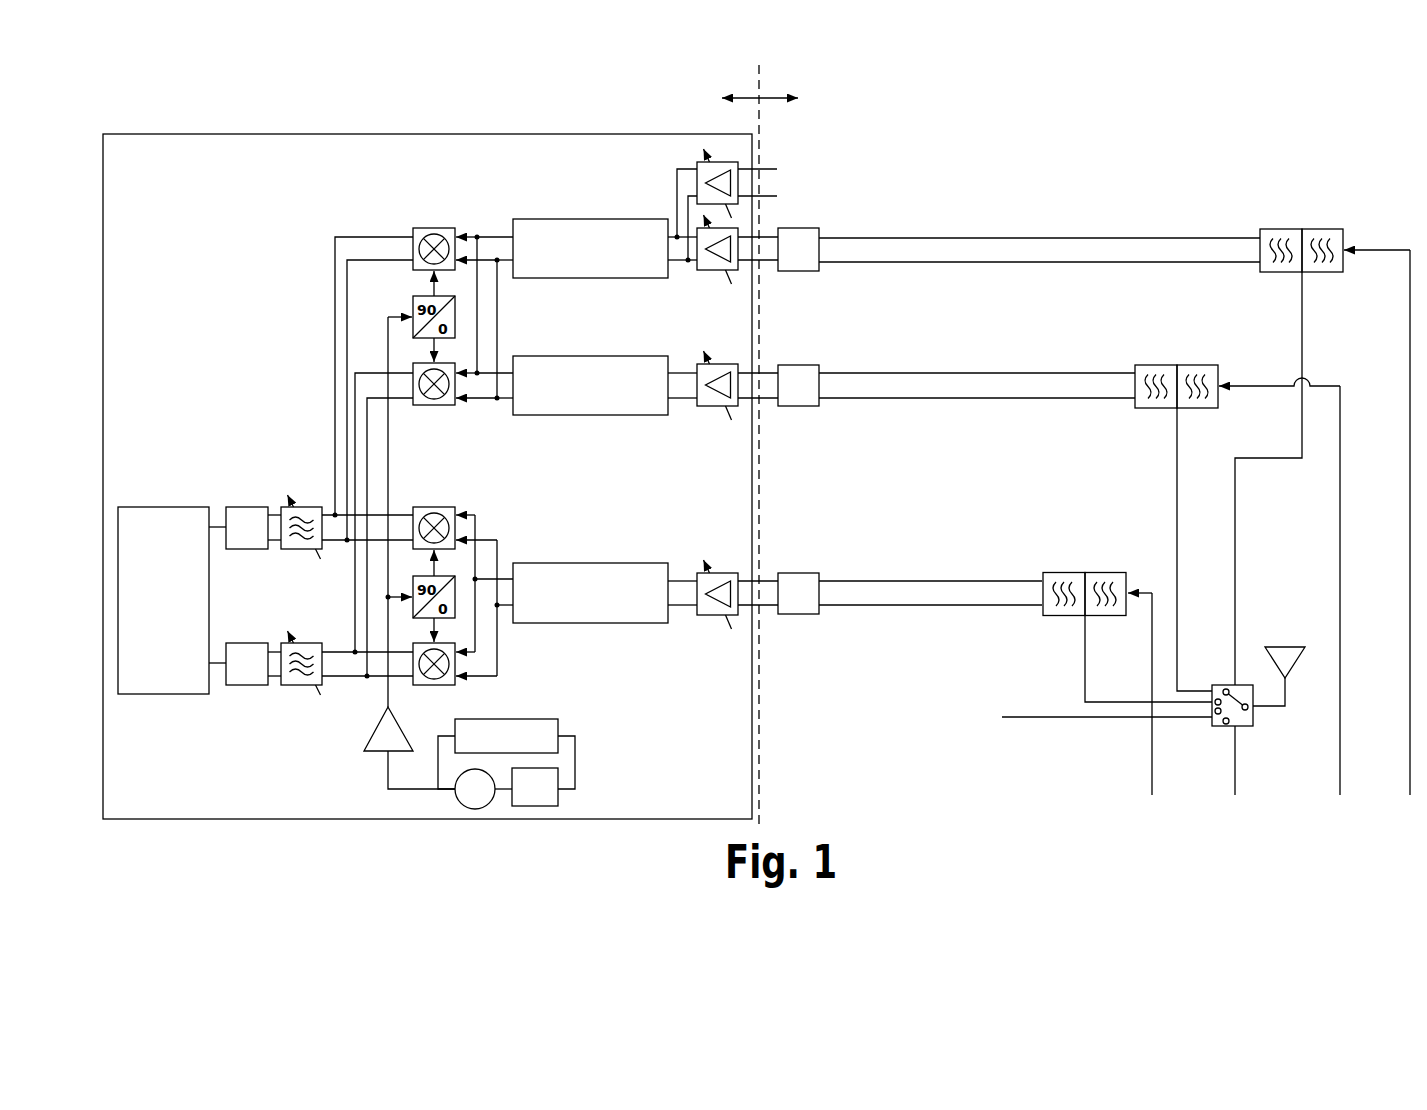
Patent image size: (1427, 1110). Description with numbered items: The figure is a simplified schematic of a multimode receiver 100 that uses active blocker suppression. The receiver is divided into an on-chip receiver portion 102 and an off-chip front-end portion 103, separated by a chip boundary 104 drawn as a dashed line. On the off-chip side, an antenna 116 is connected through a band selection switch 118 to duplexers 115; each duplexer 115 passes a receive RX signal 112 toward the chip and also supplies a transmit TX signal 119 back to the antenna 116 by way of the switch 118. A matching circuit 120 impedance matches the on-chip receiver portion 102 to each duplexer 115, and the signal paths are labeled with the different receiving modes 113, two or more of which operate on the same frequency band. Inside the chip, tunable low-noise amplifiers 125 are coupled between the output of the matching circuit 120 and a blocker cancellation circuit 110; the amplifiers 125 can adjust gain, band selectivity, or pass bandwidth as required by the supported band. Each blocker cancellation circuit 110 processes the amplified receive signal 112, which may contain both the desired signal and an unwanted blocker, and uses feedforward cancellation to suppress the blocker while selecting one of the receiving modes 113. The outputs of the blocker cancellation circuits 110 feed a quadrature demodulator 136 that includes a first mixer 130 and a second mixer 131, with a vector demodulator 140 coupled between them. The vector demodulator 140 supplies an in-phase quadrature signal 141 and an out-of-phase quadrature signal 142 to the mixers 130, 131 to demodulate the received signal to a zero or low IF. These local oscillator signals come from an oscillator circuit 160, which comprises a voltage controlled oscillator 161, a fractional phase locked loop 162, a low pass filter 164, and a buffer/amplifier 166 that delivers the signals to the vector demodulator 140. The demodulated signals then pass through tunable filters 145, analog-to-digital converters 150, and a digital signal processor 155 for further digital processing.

The multimode receiver 100 is at (1238, 100).
The on-chip receiver portion 102 is at (437, 134).
The off-chip front-end portion 103 is at (990, 150).
The chip boundary 104 is at (760, 82).
The blocker cancellation circuit 110 is at (577, 219).
The receive RX signal 112 is at (1017, 237).
The receiving modes 113 is at (842, 181).
The duplexer 115 is at (1280, 229).
The antenna 116 is at (1273, 647).
The band selection switch 118 is at (1240, 726).
The transmit TX signal 119 is at (1152, 768).
The matching circuit 120 is at (800, 228).
The tunable low-noise amplifier 125 is at (697, 170).
The first mixer 130 is at (437, 406).
The second mixer 131 is at (437, 228).
The quadrature demodulator 136 is at (398, 205).
The vector demodulator 140 is at (413, 300).
The in-phase quadrature signal 141 is at (434, 347).
The out-of-phase quadrature signal 142 is at (434, 290).
The tunable filter 145 is at (318, 498).
The analog-to-digital converter 150 is at (253, 505).
The digital signal processor 155 is at (183, 505).
The oscillator circuit 160 is at (533, 756).
The voltage controlled oscillator 161 is at (455, 797).
The fractional phase locked loop 162 is at (535, 719).
The low pass filter 164 is at (558, 797).
The buffer/amplifier 166 is at (370, 740).